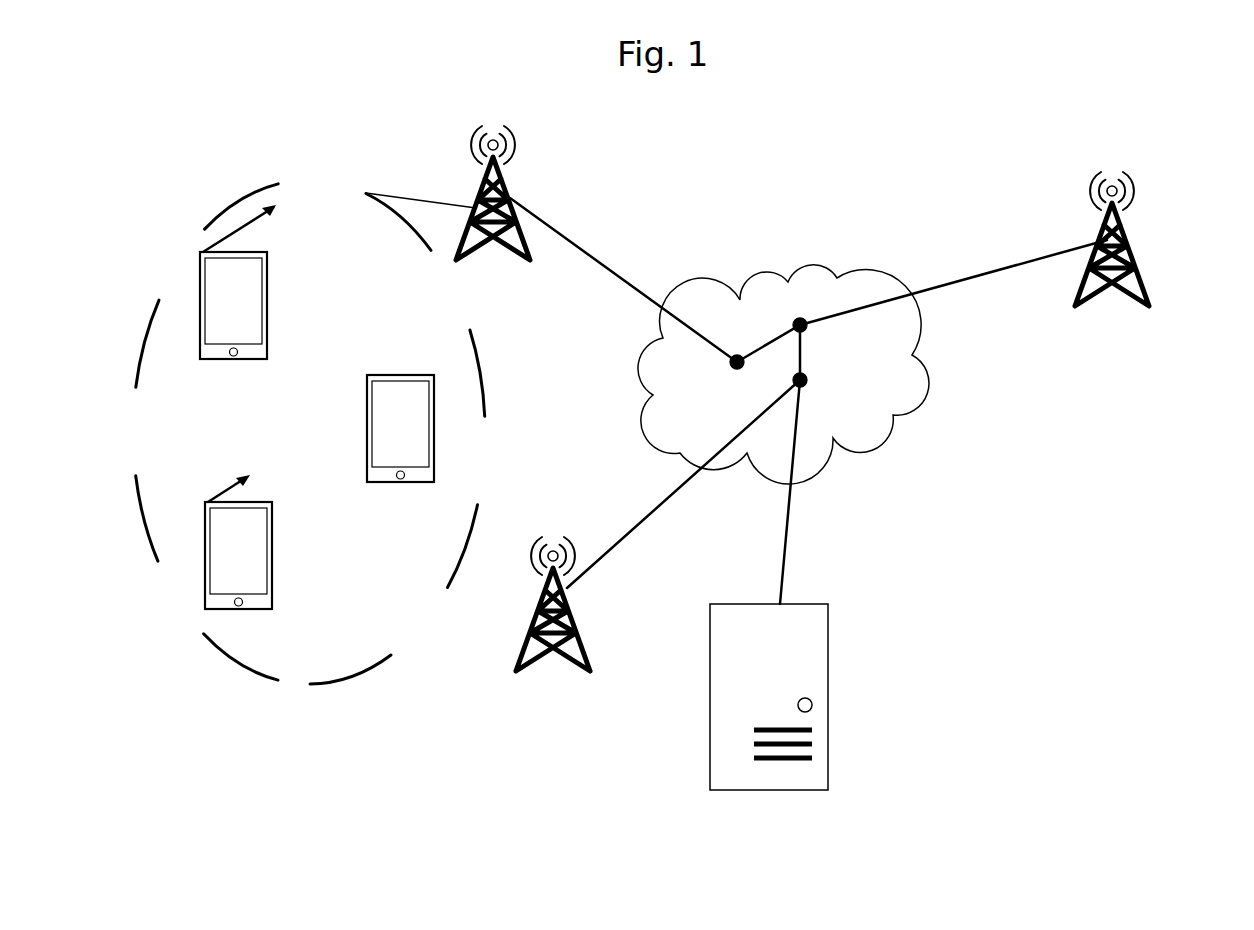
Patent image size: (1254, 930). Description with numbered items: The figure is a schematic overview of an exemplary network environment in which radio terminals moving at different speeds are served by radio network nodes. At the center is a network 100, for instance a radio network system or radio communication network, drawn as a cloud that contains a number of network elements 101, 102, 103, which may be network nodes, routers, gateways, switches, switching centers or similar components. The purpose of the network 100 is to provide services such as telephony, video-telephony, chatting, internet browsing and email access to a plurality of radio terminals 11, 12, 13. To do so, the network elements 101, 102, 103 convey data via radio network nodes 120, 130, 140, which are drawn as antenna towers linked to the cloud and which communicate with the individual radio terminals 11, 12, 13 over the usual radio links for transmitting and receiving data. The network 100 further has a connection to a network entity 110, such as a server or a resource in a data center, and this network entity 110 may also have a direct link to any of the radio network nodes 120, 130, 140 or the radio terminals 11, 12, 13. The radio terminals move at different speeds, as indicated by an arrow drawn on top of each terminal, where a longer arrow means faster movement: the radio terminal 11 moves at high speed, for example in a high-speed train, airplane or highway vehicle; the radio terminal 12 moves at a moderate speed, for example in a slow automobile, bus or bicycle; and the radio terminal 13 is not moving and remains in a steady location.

The radio terminal 11 is at (247, 362).
The radio terminal 12 is at (249, 610).
The radio terminal 13 is at (432, 436).
The network 100 is at (852, 458).
The network element 101 is at (739, 354).
The network element 102 is at (806, 387).
The network element 103 is at (808, 327).
The network entity 110 is at (828, 745).
The radio network node 120 is at (497, 243).
The radio network node 130 is at (553, 655).
The radio network node 140 is at (1150, 307).